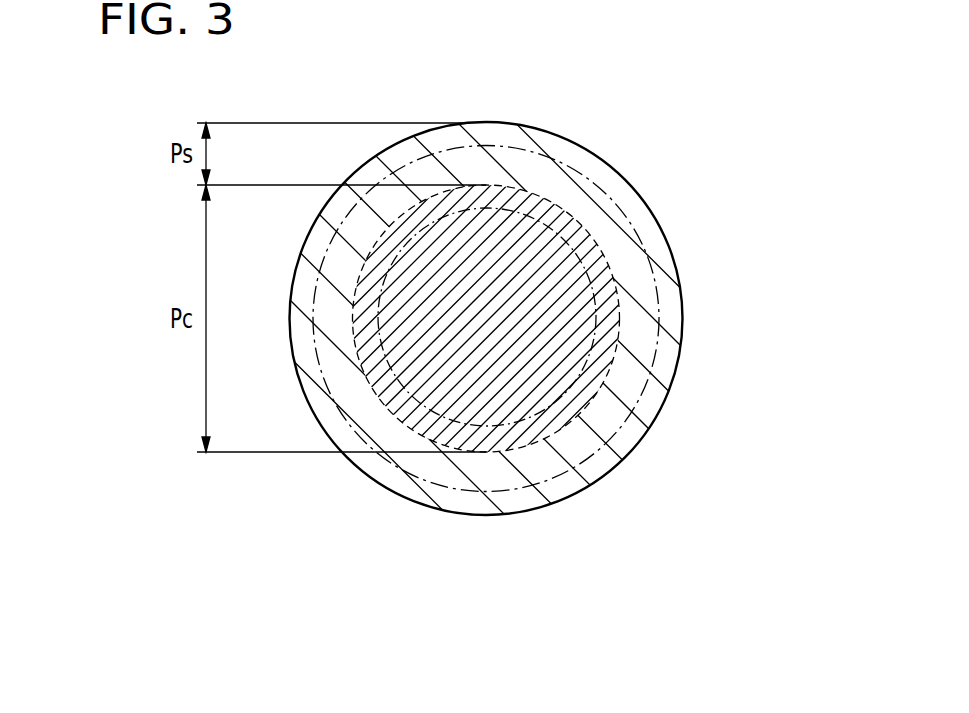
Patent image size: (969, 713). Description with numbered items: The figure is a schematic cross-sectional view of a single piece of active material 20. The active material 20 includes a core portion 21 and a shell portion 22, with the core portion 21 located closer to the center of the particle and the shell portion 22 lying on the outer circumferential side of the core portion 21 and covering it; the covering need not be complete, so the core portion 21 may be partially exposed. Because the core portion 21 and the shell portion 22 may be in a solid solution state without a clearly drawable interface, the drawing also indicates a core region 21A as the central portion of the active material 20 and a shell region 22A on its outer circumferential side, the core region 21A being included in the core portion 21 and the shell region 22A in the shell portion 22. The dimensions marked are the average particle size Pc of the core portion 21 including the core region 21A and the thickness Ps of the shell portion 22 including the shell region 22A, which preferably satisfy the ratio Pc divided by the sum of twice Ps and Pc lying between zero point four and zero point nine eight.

The active material 20 is at (814, 110).
The core portion 21 is at (610, 267).
The core region 21A is at (597, 330).
The shell portion 22 is at (607, 177).
The shell region 22A is at (633, 220).